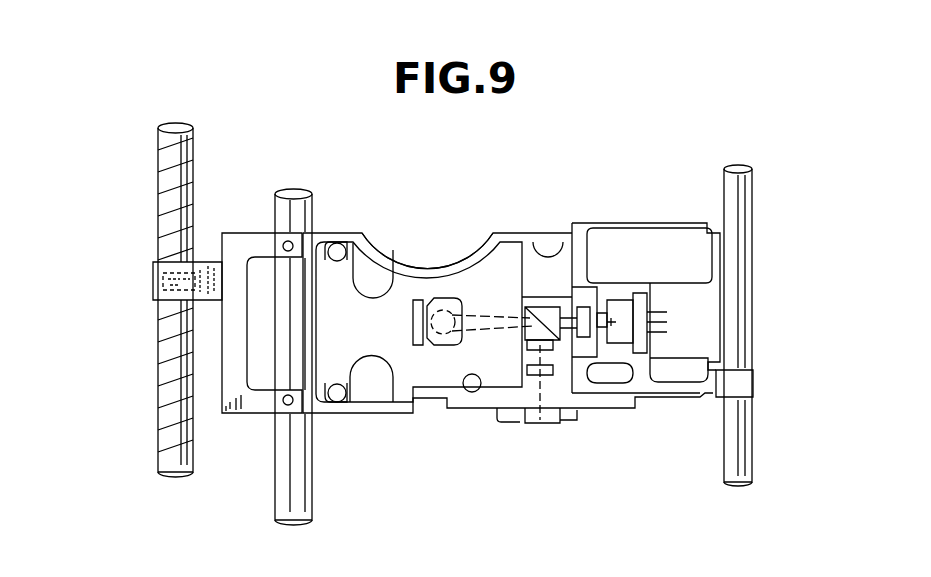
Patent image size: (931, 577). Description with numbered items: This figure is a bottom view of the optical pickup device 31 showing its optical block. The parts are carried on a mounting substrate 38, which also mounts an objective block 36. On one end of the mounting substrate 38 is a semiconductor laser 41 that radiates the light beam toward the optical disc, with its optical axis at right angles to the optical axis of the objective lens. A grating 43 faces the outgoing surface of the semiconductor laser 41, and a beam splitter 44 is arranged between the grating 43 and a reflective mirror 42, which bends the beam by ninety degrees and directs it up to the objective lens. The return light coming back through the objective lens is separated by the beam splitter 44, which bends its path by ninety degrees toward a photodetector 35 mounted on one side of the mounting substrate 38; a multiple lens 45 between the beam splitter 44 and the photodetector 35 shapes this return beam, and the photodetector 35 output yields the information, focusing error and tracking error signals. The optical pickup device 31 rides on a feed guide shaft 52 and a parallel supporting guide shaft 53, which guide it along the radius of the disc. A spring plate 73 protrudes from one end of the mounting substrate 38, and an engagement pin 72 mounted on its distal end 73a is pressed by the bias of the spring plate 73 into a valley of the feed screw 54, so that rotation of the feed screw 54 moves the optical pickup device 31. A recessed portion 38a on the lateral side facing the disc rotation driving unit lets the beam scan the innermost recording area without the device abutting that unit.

The optical pickup device 31 is at (662, 298).
The photodetector 35 is at (538, 425).
The objective block 36 is at (582, 387).
The mounting substrate 38 is at (375, 410).
The recessed portion 38a is at (428, 260).
The semiconductor laser 41 is at (623, 300).
The reflective mirror 42 is at (440, 347).
The grating 43 is at (582, 308).
The beam splitter 44 is at (523, 340).
The multiple lens 45 is at (532, 376).
The feed guide shaft 52 is at (273, 470).
The supporting guide shaft 53 is at (742, 463).
The feed screw 54 is at (162, 167).
The engagement pin 72 is at (155, 303).
The spring plate 73 is at (243, 240).
The distal end 73a is at (160, 276).